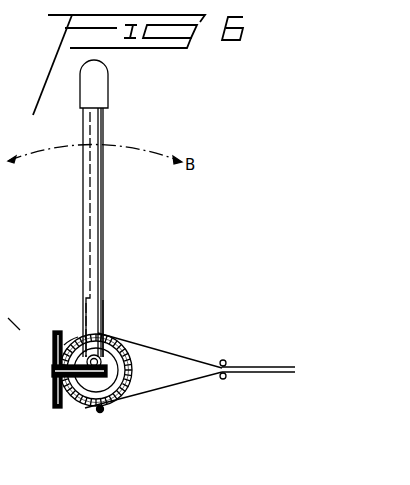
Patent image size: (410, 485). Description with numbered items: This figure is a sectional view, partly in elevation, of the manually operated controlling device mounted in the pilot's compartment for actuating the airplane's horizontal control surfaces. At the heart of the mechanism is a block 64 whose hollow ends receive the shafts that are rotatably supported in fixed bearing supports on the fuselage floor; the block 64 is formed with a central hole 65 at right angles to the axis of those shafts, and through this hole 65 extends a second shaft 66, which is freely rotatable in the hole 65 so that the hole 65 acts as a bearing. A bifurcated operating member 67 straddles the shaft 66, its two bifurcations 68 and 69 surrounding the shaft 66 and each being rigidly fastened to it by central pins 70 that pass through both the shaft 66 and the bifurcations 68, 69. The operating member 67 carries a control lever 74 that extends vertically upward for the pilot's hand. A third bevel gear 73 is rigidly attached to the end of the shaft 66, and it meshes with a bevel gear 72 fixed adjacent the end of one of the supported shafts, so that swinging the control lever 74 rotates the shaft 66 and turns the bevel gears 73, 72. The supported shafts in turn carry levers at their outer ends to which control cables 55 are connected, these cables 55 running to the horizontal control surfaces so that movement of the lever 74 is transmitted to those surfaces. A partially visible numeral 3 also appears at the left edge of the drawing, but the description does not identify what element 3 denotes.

The control lever 74 is at (103, 198).
The third bevel gear 73 is at (55, 395).
The block 64 is at (118, 378).
The bifurcation 69 is at (80, 385).
The bevel gear 72 is at (103, 405).
The central pin 70 is at (100, 369).
The central hole 65 is at (106, 340).
The bifurcation 68 is at (110, 363).
The bifurcated operating member 67 is at (104, 334).
The second shaft 66 is at (67, 333).
The cable 55 is at (267, 368).
The partial numeral 3 is at (10, 320).